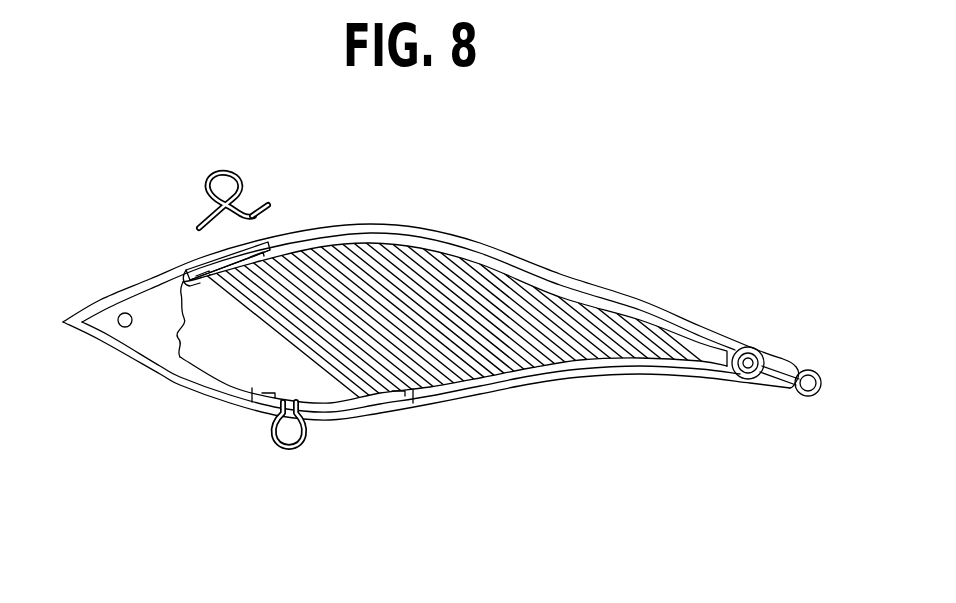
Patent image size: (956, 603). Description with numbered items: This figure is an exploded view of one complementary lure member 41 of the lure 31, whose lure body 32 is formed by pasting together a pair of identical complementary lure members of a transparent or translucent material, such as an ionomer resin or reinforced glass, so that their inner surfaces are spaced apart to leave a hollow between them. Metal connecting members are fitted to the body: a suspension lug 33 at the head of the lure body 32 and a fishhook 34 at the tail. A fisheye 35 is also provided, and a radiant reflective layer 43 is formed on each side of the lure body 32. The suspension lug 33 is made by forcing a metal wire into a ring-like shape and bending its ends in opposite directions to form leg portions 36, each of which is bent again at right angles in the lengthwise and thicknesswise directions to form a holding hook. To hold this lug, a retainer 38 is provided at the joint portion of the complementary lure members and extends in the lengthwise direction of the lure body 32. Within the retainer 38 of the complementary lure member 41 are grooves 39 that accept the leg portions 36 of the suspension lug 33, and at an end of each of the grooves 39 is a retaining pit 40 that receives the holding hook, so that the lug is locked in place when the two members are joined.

The lure 31 is at (440, 185).
The lure body 32 is at (585, 279).
The suspension lug 33 is at (212, 177).
The fishhook 34 is at (808, 397).
The fisheye 35 is at (125, 328).
The leg portion 36 is at (262, 204).
The retainer 38 is at (225, 274).
The groove 39 is at (212, 252).
The retaining pit 40 is at (193, 267).
The complementary lure member 41 is at (533, 384).
The radiant reflective layer 43 is at (414, 392).